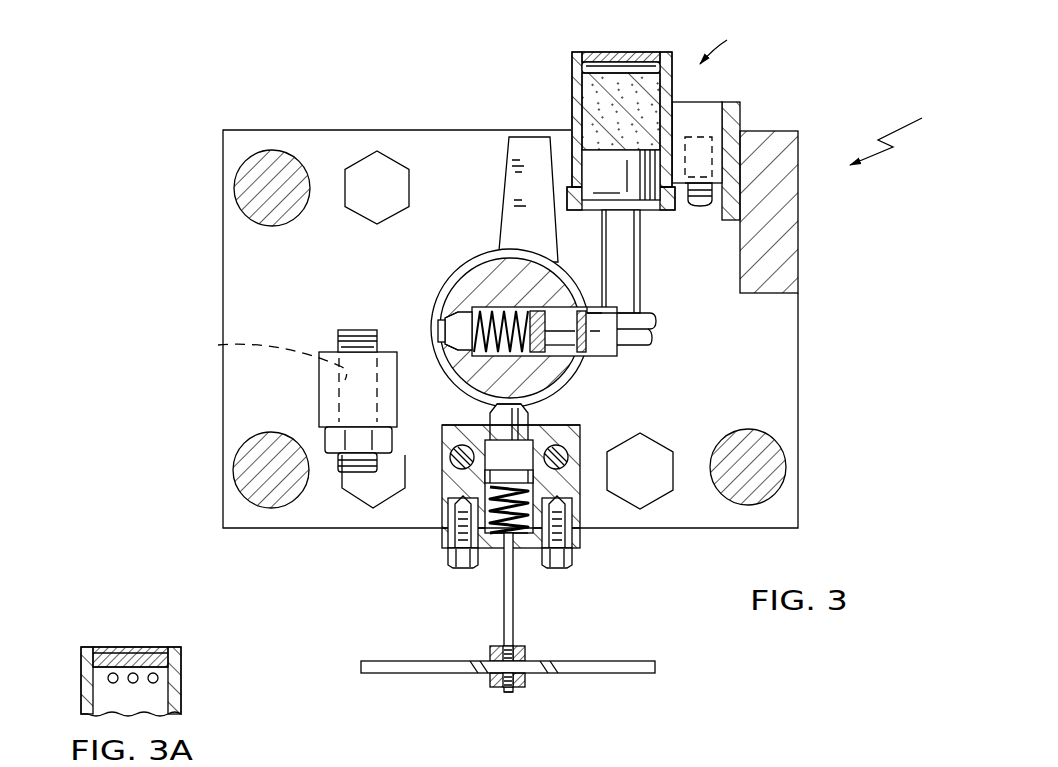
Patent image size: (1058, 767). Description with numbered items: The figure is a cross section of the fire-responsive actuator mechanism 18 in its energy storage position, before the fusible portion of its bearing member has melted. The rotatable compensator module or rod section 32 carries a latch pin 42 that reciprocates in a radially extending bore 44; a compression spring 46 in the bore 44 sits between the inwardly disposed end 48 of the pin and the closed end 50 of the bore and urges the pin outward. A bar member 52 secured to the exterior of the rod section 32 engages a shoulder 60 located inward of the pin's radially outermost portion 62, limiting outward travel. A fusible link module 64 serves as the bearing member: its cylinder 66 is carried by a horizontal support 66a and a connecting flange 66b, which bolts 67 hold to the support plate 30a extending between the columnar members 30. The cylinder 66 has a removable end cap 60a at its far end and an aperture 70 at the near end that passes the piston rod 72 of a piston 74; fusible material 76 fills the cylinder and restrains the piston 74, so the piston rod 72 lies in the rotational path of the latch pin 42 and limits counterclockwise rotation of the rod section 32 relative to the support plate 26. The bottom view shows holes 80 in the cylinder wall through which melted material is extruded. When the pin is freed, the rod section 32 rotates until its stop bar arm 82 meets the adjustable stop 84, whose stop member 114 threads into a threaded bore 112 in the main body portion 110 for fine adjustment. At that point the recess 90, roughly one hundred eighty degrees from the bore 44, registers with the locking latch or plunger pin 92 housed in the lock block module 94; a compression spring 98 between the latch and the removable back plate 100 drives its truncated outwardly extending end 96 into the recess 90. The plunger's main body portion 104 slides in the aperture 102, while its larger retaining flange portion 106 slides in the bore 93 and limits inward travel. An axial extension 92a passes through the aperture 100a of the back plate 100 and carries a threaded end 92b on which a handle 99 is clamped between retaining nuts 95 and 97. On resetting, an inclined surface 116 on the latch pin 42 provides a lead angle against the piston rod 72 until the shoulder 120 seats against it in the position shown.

In FIG. 3, the actuator mechanism 18 is at (898, 133).
In FIG. 3, the support plate 26 is at (228, 278).
In FIG. 3, the columnar members 30 is at (245, 186).
In FIG. 3, the support plate 30a is at (793, 235).
In FIG. 3, the compensator module (rod section) 32 is at (487, 278).
In FIG. 3, the latch pin 42 is at (565, 358).
In FIG. 3, the bore 44 is at (470, 375).
In FIG. 3, the compression spring 46 is at (468, 270).
In FIG. 3, the inwardly disposed end 48 is at (537, 356).
In FIG. 3, the closed end 50 is at (443, 338).
In FIG. 3, the bar member 52 is at (588, 330).
In FIG. 3, the shoulder 60 is at (630, 318).
In FIG. 3, the removable end cap 60a is at (600, 62).
In FIG. 3, the radially outermost portion 62 is at (640, 342).
In FIG. 3, the fusible link module 64 is at (732, 42).
In FIG. 3, the cylinder 66 is at (573, 76).
In FIG. 3A, the cylinder 66 is at (181, 692).
In FIG. 3, the horizontal support 66a is at (700, 102).
In FIG. 3, the connecting flange 66b is at (742, 116).
In FIG. 3, the bolts 67 is at (708, 196).
In FIG. 3, the aperture 70 is at (608, 212).
In FIG. 3, the piston rod 72 is at (642, 266).
In FIG. 3, the piston 74 is at (621, 175).
In FIG. 3, the fusible material 76 is at (592, 94).
In FIG. 3A, the holes 80 is at (158, 676).
In FIG. 3, the stop bar arm 82 is at (525, 137).
In FIG. 3, the adjustable stop 84 is at (319, 384).
In FIG. 3, the recess 90 is at (452, 312).
In FIG. 3, the locking latch (plunger pin) 92 is at (562, 428).
In FIG. 3, the axial extension 92a is at (503, 617).
In FIG. 3, the threaded end 92b is at (506, 694).
In FIG. 3, the bore 93 is at (485, 476).
In FIG. 3, the lock block module 94 is at (580, 522).
In FIG. 3, the retaining nut 95 is at (522, 648).
In FIG. 3, the outwardly extending end 96 is at (540, 410).
In FIG. 3, the retaining nut 97 is at (528, 682).
In FIG. 3, the compression spring 98 is at (490, 512).
In FIG. 3, the handle 99 is at (632, 661).
In FIG. 3, the back plate 100 is at (474, 570).
In FIG. 3, the aperture 100a is at (518, 560).
In FIG. 3, the aperture 102 is at (496, 406).
In FIG. 3, the main body portion 104 is at (490, 455).
In FIG. 3, the retaining flange portion 106 is at (509, 330).
In FIG. 3, the main body portion 110 is at (319, 410).
In FIG. 3, the threaded bore 112 is at (260, 355).
In FIG. 3, the stop member 114 is at (345, 330).
In FIG. 3, the inclined surface 116 is at (600, 350).
In FIG. 3, the shoulder 120 is at (622, 307).